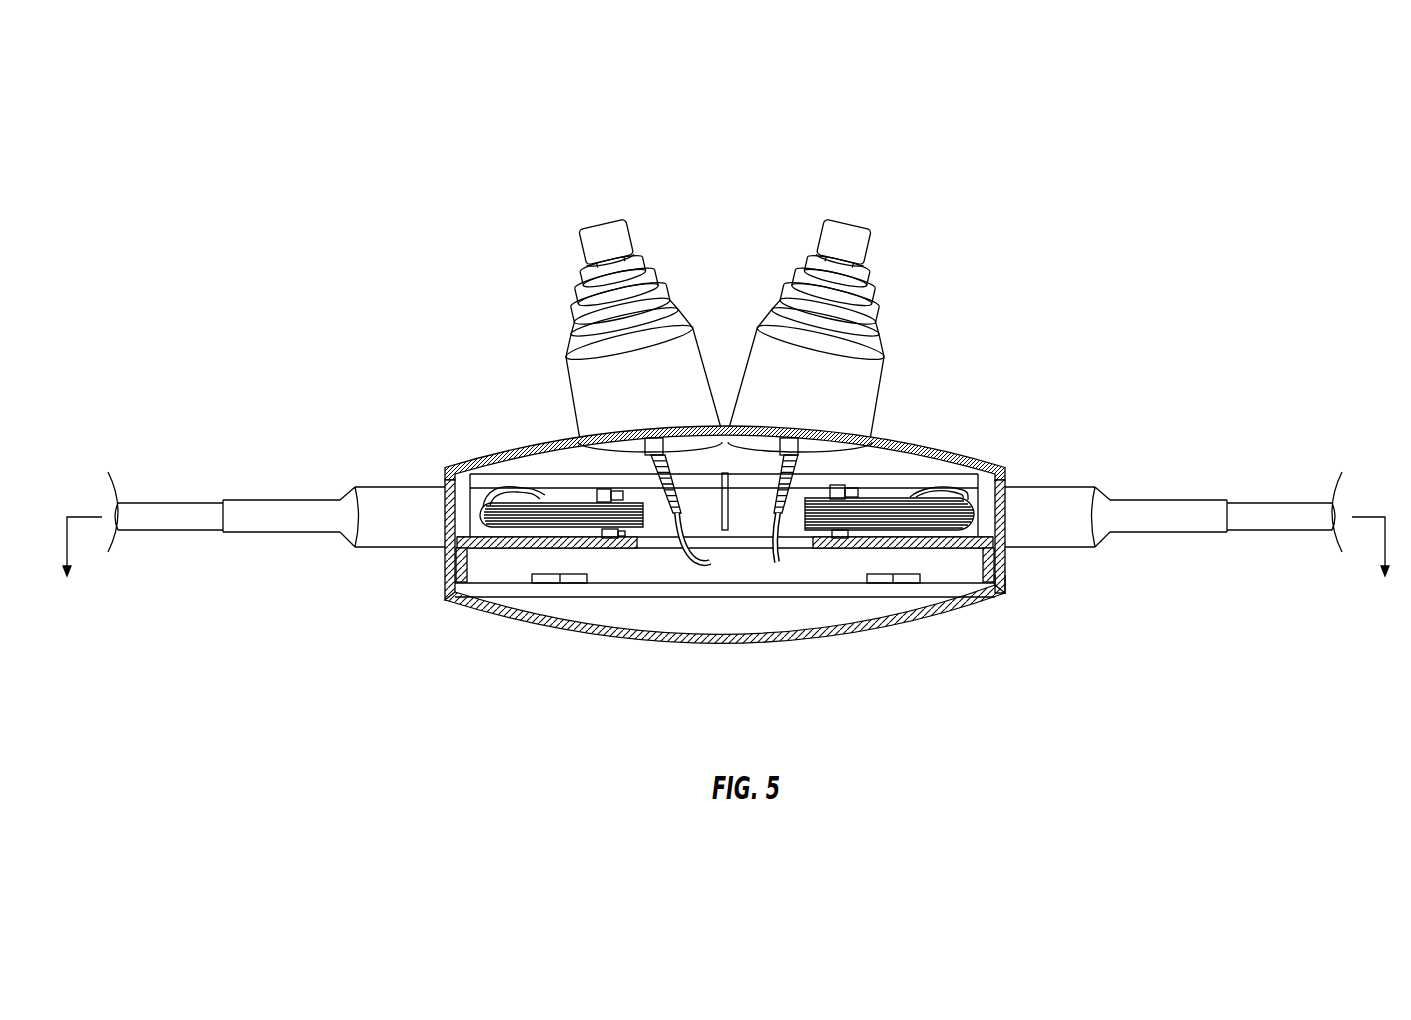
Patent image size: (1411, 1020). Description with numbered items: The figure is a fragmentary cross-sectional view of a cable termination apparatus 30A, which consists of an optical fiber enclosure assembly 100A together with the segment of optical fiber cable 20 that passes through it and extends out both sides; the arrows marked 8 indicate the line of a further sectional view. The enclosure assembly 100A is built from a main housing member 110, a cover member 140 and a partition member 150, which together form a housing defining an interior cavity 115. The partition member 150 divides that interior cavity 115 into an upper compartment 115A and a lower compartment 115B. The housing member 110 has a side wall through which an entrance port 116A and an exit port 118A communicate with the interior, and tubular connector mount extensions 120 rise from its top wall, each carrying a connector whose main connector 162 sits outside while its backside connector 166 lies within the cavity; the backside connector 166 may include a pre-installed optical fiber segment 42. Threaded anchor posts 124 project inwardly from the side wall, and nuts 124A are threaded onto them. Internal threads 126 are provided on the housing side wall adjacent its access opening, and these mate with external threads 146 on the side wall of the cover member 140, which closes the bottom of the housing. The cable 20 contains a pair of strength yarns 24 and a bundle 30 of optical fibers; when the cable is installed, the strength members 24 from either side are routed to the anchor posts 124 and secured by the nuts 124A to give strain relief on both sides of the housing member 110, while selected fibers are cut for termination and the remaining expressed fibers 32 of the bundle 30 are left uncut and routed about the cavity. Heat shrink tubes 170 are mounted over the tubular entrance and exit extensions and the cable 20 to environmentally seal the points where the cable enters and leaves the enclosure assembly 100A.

The section line 8- 8 is at (724, 562).
The optical fiber cable 20 is at (176, 505).
The strength yarns 24 is at (446, 580).
The bundle of optical fibers 30 is at (918, 528).
The cable termination apparatus 30A is at (698, 426).
The expressed fibers 32 is at (530, 515).
The pre-installed optical fiber segment 42 is at (670, 530).
The optical fiber enclosure assembly 100A is at (724, 426).
The main housing member 110 is at (452, 470).
The interior cavity 115 is at (676, 572).
The upper compartment 115A is at (900, 472).
The lower compartment 115B is at (825, 620).
The entrance port 116A is at (940, 493).
The exit port 118A is at (508, 492).
The tubular connector mount extensions 120 is at (565, 383).
The threaded anchor posts 124 is at (797, 452).
The nuts 124A is at (848, 490).
The internal threads 126 is at (1000, 600).
The cover member 140 is at (747, 648).
The external threads 146 is at (1003, 560).
The partition member 150 is at (735, 572).
The main connector 162 is at (578, 298).
The backside connector 166 is at (640, 452).
The heat shrink tubes 170 is at (292, 497).